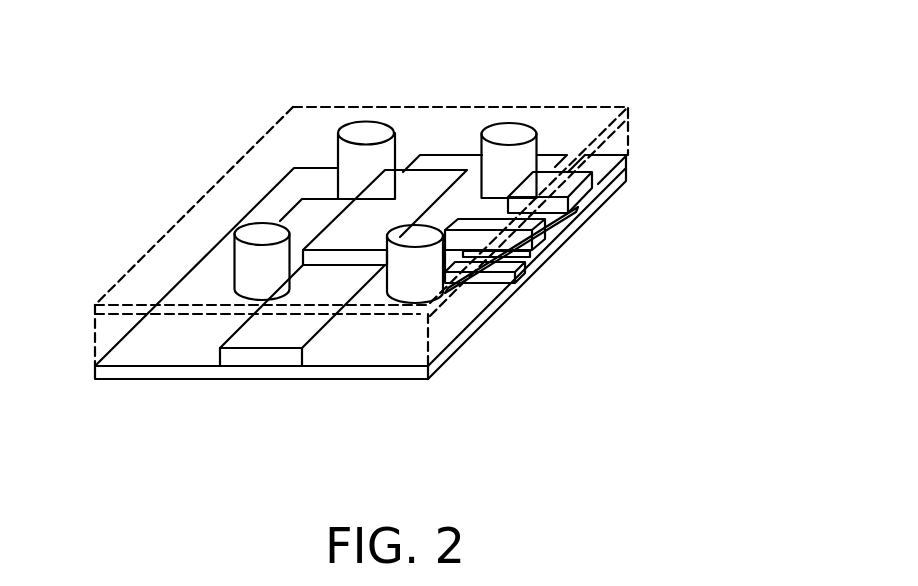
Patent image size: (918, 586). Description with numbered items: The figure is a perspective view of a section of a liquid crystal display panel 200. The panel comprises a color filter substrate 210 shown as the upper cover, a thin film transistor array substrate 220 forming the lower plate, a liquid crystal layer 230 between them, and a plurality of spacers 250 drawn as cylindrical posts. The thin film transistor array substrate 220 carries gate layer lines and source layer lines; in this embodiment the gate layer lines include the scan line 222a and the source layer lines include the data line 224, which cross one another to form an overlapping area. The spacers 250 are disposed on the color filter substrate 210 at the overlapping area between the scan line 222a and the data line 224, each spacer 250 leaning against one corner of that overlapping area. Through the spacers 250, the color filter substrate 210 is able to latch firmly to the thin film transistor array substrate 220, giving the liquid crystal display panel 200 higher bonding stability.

The liquid crystal display panel 200 is at (672, 452).
The color filter substrate 210 is at (633, 113).
The thin film transistor array substrate 220 is at (612, 196).
The scan line 222a is at (557, 235).
The data line 224 is at (263, 352).
The liquid crystal layer 230 is at (606, 150).
The spacer 250 is at (505, 127).